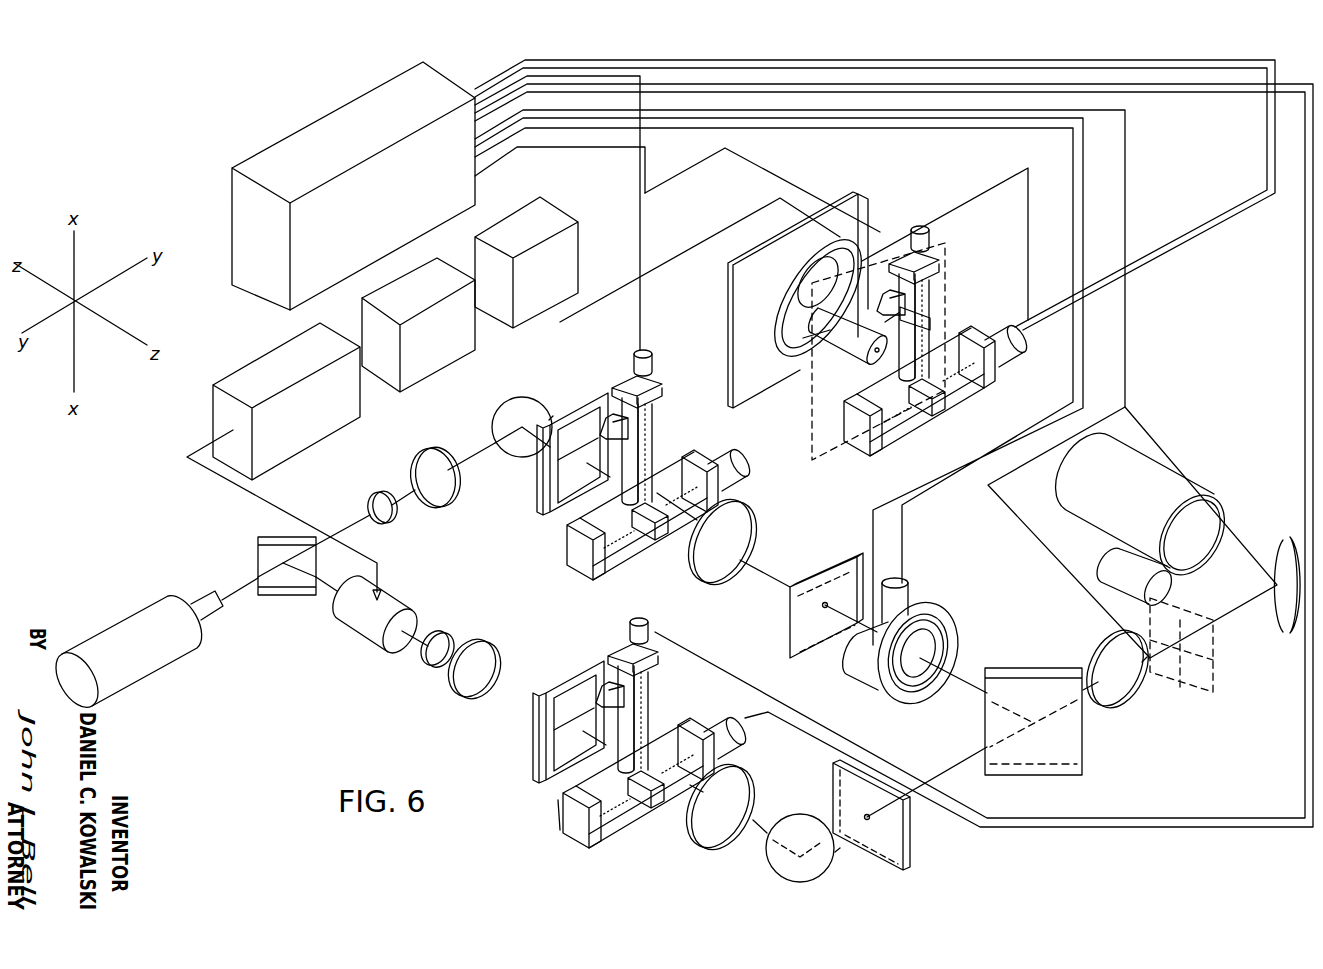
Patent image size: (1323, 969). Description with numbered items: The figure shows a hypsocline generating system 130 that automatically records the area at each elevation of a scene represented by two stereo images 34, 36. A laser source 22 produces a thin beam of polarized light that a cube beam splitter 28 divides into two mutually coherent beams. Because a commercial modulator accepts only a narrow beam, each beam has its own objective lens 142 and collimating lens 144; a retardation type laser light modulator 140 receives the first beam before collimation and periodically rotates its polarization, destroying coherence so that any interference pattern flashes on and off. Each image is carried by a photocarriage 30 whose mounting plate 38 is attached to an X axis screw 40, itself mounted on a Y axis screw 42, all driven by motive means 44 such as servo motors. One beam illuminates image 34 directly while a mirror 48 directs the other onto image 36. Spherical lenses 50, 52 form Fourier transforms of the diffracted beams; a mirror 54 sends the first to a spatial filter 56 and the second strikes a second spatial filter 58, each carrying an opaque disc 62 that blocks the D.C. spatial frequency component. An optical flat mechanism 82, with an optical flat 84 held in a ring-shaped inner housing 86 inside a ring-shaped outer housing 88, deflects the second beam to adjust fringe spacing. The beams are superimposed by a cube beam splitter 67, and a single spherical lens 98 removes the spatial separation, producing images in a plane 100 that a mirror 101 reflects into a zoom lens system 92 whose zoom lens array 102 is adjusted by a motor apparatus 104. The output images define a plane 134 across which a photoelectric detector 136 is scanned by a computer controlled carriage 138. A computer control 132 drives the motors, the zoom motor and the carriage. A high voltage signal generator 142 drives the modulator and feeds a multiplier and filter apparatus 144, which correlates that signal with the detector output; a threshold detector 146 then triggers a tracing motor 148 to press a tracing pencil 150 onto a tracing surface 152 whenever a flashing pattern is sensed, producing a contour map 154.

The laser source 22 is at (176, 663).
The cube beam splitter 28 is at (272, 540).
The photocarriage 30 is at (563, 870).
The stereo image 34 is at (547, 768).
The stereo image 36 is at (563, 498).
The mounting plate 38 is at (603, 417).
The X axis screw 40 is at (648, 397).
The Y axis screw 42 is at (665, 480).
The motive means 44 is at (650, 367).
The mirror 48 is at (540, 410).
The spherical lens 50 is at (743, 788).
The spherical lens 52 is at (743, 524).
The mirror 54 is at (807, 870).
The spatial filter 56 is at (887, 867).
The second spatial filter 58 is at (853, 530).
The opaque disc 62 is at (817, 605).
The cube beam splitter 67 is at (1070, 745).
The optical flat mechanism 82 is at (957, 610).
The optical flat 84 is at (920, 658).
The ring-shaped inner housing 86 is at (947, 632).
The ring-shaped outer housing 88 is at (912, 702).
The zoom lens system 92 is at (1213, 497).
The spherical lens 98 is at (1140, 698).
The image plane 100 is at (1213, 662).
The mirror 101 is at (1282, 547).
The zoom lens array 102 is at (1160, 473).
The motor apparatus 104 is at (1113, 583).
The hypsocline generating system 130 is at (1318, 62).
The computer control 132 is at (238, 168).
The plane 134 is at (945, 297).
The photoelectric detector 136 is at (848, 363).
The computer controlled carriage 138 is at (872, 462).
The retardation type laser light modulator 140 is at (370, 640).
The objective lens / high voltage signal generator 142 is at (450, 643).
The collimating lens / multiplier and filter apparatus 144 is at (497, 662).
The threshold detector 146 is at (530, 262).
The tracing motor 148 is at (812, 363).
The tracing pencil 150 is at (792, 323).
The tracing surface 152 is at (852, 212).
The map 154 is at (787, 283).